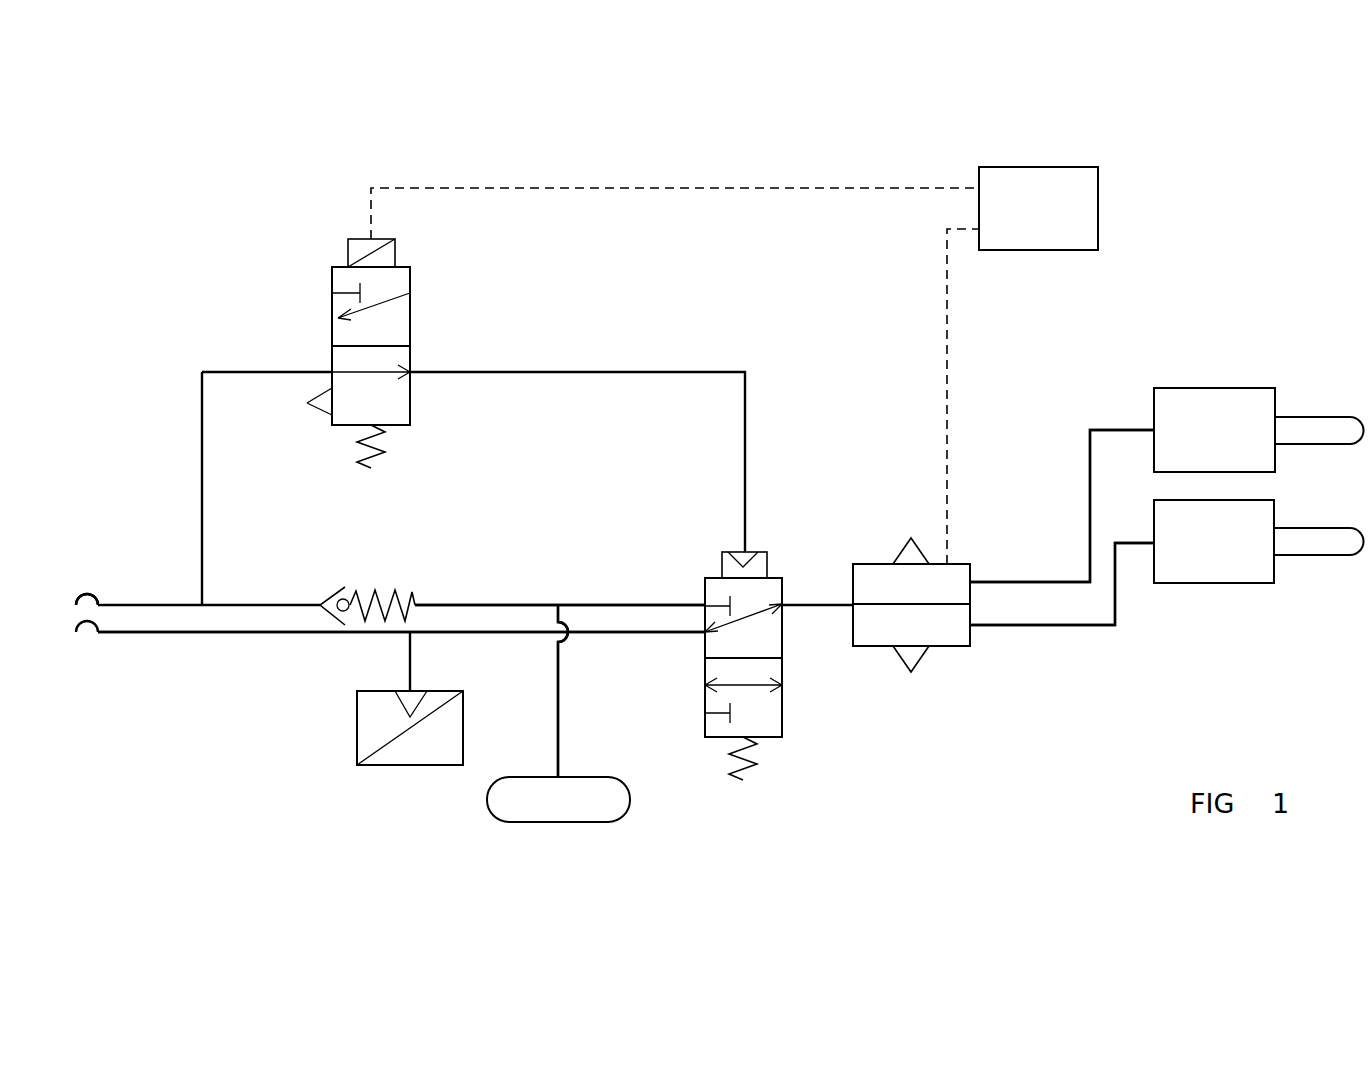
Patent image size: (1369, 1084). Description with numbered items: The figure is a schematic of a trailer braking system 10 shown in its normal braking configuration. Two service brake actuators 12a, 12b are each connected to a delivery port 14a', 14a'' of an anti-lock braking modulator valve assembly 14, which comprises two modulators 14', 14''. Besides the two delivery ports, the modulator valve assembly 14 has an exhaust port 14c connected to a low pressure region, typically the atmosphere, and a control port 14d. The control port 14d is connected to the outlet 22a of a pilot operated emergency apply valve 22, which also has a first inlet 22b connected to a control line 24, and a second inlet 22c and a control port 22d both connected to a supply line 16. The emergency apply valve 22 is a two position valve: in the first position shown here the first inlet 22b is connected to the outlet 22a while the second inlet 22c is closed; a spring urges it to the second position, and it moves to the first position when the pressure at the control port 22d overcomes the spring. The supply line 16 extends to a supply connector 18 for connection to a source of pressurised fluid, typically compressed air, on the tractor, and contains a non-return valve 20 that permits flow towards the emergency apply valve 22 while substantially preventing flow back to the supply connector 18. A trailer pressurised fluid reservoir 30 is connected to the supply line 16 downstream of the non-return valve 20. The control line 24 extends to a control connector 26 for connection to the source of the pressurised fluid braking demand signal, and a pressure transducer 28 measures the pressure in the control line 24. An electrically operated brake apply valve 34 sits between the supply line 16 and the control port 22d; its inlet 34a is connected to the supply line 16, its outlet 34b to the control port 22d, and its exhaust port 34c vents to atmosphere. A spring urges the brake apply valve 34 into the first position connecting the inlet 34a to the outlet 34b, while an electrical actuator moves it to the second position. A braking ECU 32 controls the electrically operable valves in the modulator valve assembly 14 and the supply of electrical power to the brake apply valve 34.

The trailer braking system 10 is at (808, 755).
The service brake actuator 12a is at (1229, 554).
The service brake actuator 12b is at (1229, 442).
The modulator valve assembly 14 is at (946, 668).
The modulator 14' is at (911, 625).
The modulator 14'' is at (911, 584).
The delivery port 14a' is at (1062, 631).
The delivery port 14a'' is at (1062, 506).
The exhaust port 14c is at (911, 672).
The control port 14d is at (853, 607).
The supply line 16 is at (458, 605).
The supply connector 18 is at (98, 604).
The non-return valve 20 is at (378, 590).
The emergency apply valve 22 is at (705, 700).
The outlet 22a is at (782, 604).
The first inlet 22b is at (705, 633).
The second inlet 22c is at (705, 604).
The control port 22d is at (745, 552).
The control line 24 is at (487, 633).
The control connector 26 is at (92, 630).
The pressure transducer 28 is at (357, 737).
The trailer pressurised fluid reservoir 30 is at (558, 799).
The braking ECU 32 is at (723, 217).
The brake apply valve 34 is at (412, 310).
The inlet 34a is at (332, 372).
The outlet 34b is at (410, 372).
The exhaust port 34c is at (307, 403).